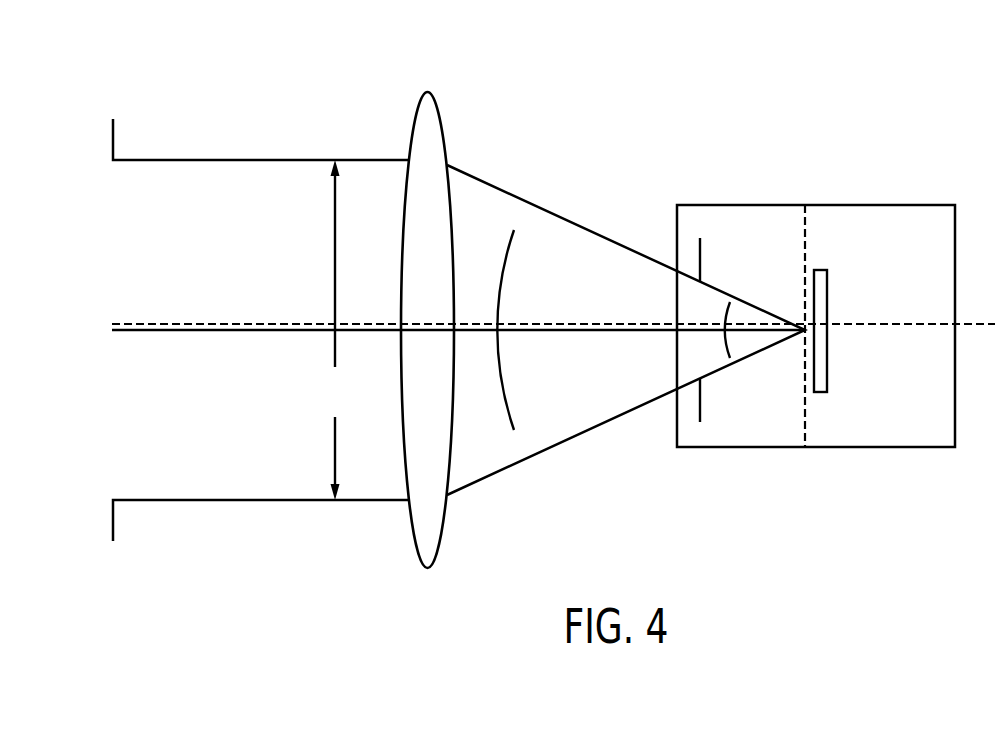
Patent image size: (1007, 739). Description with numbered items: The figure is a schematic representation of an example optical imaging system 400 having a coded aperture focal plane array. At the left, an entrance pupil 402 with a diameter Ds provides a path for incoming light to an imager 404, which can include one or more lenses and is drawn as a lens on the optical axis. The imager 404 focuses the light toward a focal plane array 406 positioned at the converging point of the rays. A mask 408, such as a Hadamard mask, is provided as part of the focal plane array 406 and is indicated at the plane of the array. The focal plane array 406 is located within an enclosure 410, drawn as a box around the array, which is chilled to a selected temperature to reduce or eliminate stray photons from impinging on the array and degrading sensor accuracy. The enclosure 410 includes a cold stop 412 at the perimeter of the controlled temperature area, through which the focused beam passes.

The optical imaging system 400 is at (930, 127).
The entrance pupil 402 is at (205, 257).
The imager 404 is at (428, 92).
The focal plane array 406 is at (827, 357).
The mask 408 is at (806, 244).
The enclosure 410 is at (903, 246).
The cold stop 412 is at (712, 275).